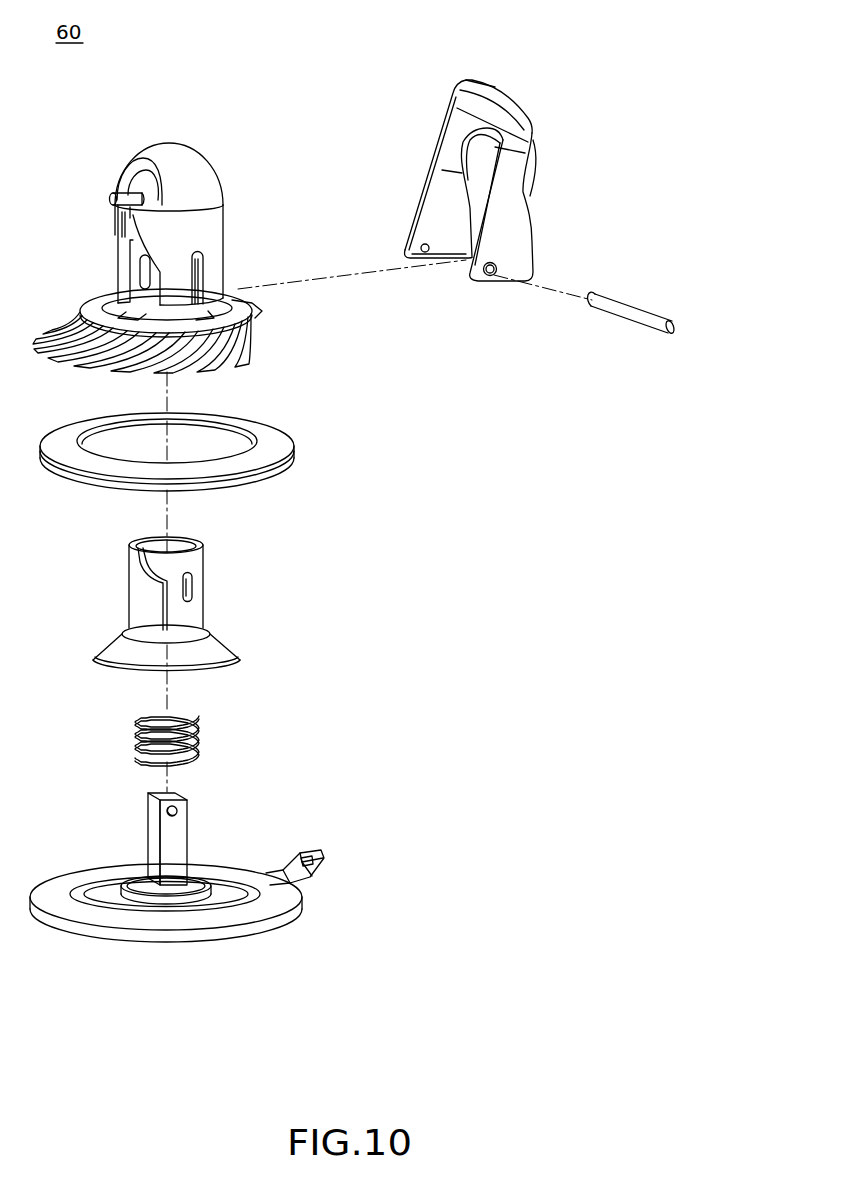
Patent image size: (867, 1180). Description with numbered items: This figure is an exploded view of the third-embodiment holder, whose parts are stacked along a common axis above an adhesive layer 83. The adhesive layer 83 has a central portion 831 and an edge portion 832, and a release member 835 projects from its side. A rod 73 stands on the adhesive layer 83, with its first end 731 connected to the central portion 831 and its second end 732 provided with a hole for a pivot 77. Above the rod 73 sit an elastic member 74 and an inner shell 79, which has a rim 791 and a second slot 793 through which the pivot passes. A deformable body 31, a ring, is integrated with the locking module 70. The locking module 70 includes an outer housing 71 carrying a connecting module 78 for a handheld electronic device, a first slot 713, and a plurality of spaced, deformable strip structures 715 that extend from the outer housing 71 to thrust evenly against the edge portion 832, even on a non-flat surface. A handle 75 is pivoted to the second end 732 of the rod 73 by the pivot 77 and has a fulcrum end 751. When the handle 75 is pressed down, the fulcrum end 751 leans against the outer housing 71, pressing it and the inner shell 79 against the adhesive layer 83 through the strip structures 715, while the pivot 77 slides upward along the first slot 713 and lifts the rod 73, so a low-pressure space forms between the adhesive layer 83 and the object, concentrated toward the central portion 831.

The locking module 70 is at (265, 146).
The outer housing 71 is at (173, 143).
The connecting module 78 is at (116, 194).
The first slot 713 is at (196, 290).
The strip structures 715 is at (258, 347).
The handle 75 is at (533, 122).
The fulcrum end 751 is at (530, 275).
The pivot 77 is at (655, 337).
The deformable body 31 is at (70, 472).
The inner shell 79 is at (130, 553).
The second slot 793 is at (193, 583).
The rim 791 is at (225, 660).
The elastic member 74 is at (185, 725).
The rod 73 is at (148, 820).
The second end 732 is at (180, 801).
The first end 731 is at (133, 880).
The adhesive layer 83 is at (297, 935).
The central portion 831 is at (200, 880).
The edge portion 832 is at (258, 884).
The release member 835 is at (320, 855).